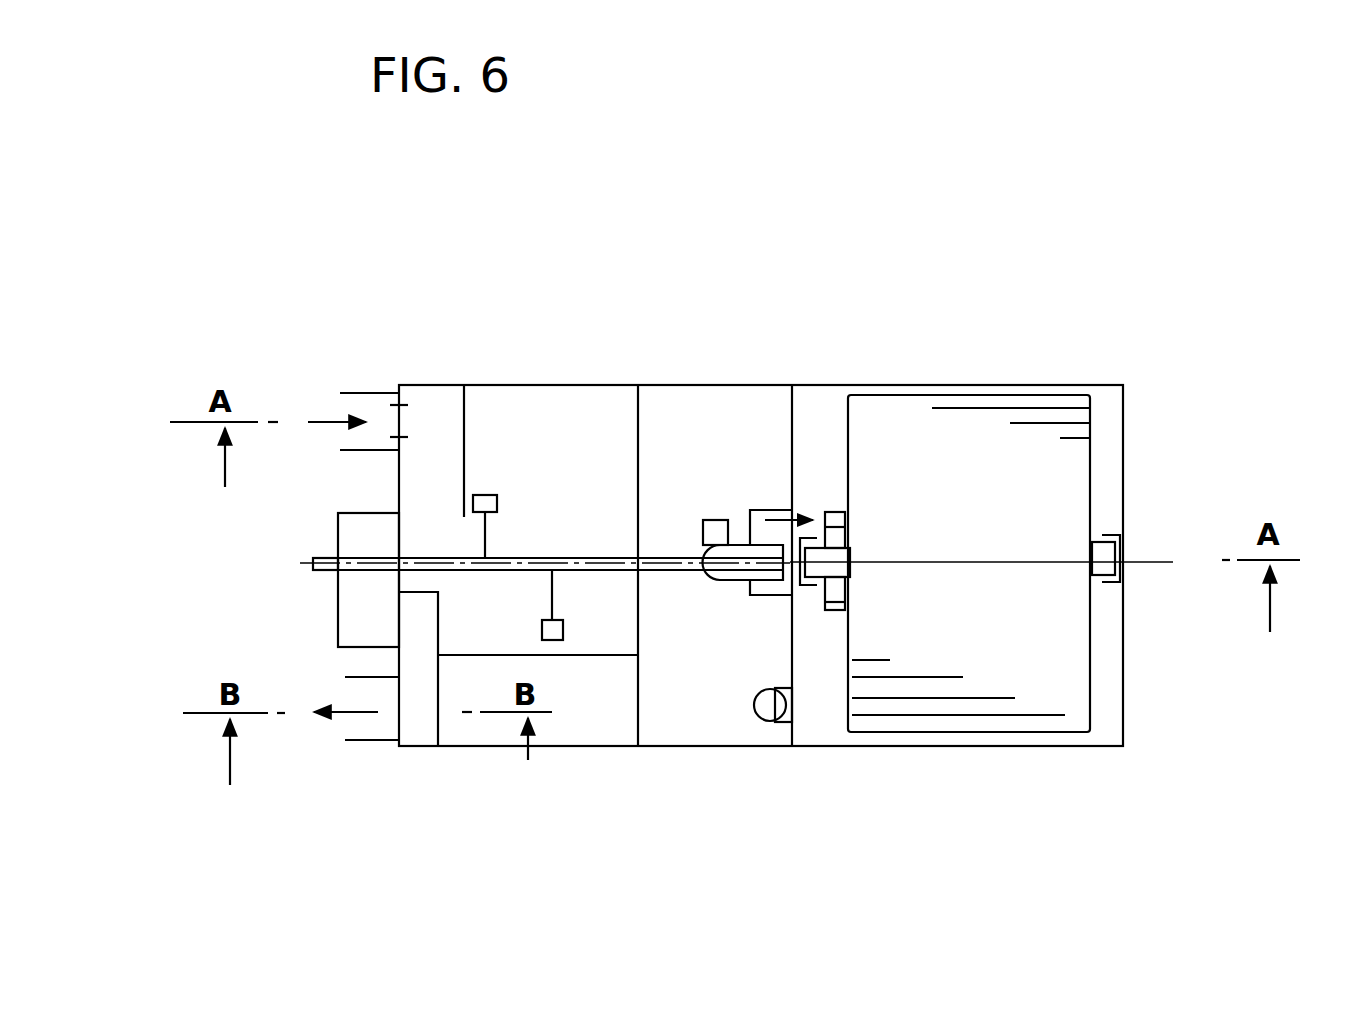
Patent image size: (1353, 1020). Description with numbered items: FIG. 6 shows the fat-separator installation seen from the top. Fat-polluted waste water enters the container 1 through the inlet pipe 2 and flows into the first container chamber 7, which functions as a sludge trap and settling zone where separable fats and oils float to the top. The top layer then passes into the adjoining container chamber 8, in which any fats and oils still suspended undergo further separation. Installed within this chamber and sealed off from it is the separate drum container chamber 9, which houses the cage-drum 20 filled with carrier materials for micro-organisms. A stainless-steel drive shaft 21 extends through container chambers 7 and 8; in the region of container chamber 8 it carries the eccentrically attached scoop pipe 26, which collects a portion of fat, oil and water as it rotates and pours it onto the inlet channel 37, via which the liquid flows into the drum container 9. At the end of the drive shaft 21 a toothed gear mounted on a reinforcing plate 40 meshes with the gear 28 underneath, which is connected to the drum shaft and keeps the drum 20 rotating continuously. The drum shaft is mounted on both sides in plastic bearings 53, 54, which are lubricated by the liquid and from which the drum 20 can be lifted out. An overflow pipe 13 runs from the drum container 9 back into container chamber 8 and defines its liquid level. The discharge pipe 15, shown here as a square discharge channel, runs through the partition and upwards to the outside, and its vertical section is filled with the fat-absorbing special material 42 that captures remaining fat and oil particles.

The container 1 is at (890, 385).
The inlet pipe 2 is at (371, 393).
The container chamber 7 is at (606, 418).
The container chamber 8 is at (697, 421).
The container chamber 9 is at (1028, 477).
The overflow pipe 13 is at (752, 712).
The discharge pipe 15 is at (418, 746).
The drum 20 is at (972, 420).
The drive shaft 21 is at (585, 557).
The scoop pipe 26 is at (722, 520).
The gear 28 is at (838, 591).
The inlet channel 37 is at (778, 520).
The reinforcing plate 40 is at (466, 425).
The special material 42 is at (772, 715).
The plastic bearing 53 is at (1110, 587).
The plastic bearing 54 is at (808, 588).